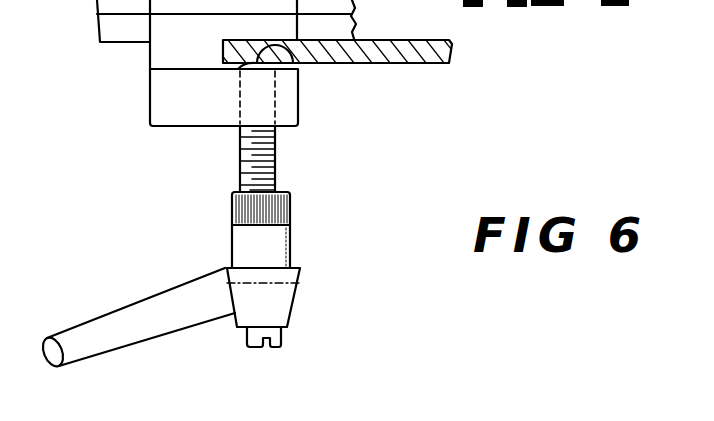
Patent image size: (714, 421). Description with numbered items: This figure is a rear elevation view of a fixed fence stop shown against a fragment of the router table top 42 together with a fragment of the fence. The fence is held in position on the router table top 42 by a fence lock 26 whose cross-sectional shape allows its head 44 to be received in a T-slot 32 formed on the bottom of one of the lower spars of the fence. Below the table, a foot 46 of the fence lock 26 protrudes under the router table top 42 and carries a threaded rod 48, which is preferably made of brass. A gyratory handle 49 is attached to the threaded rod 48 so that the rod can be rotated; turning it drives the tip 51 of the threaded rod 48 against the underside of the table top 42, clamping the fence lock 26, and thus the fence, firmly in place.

The fence lock 26 is at (150, 110).
The T-slot 32 is at (130, 13).
The router table top 42 is at (370, 57).
The head 44 is at (190, 7).
The foot 46 is at (192, 112).
The threaded rod 48 is at (275, 153).
The gyratory handle 49 is at (167, 303).
The tip 51 is at (300, 65).